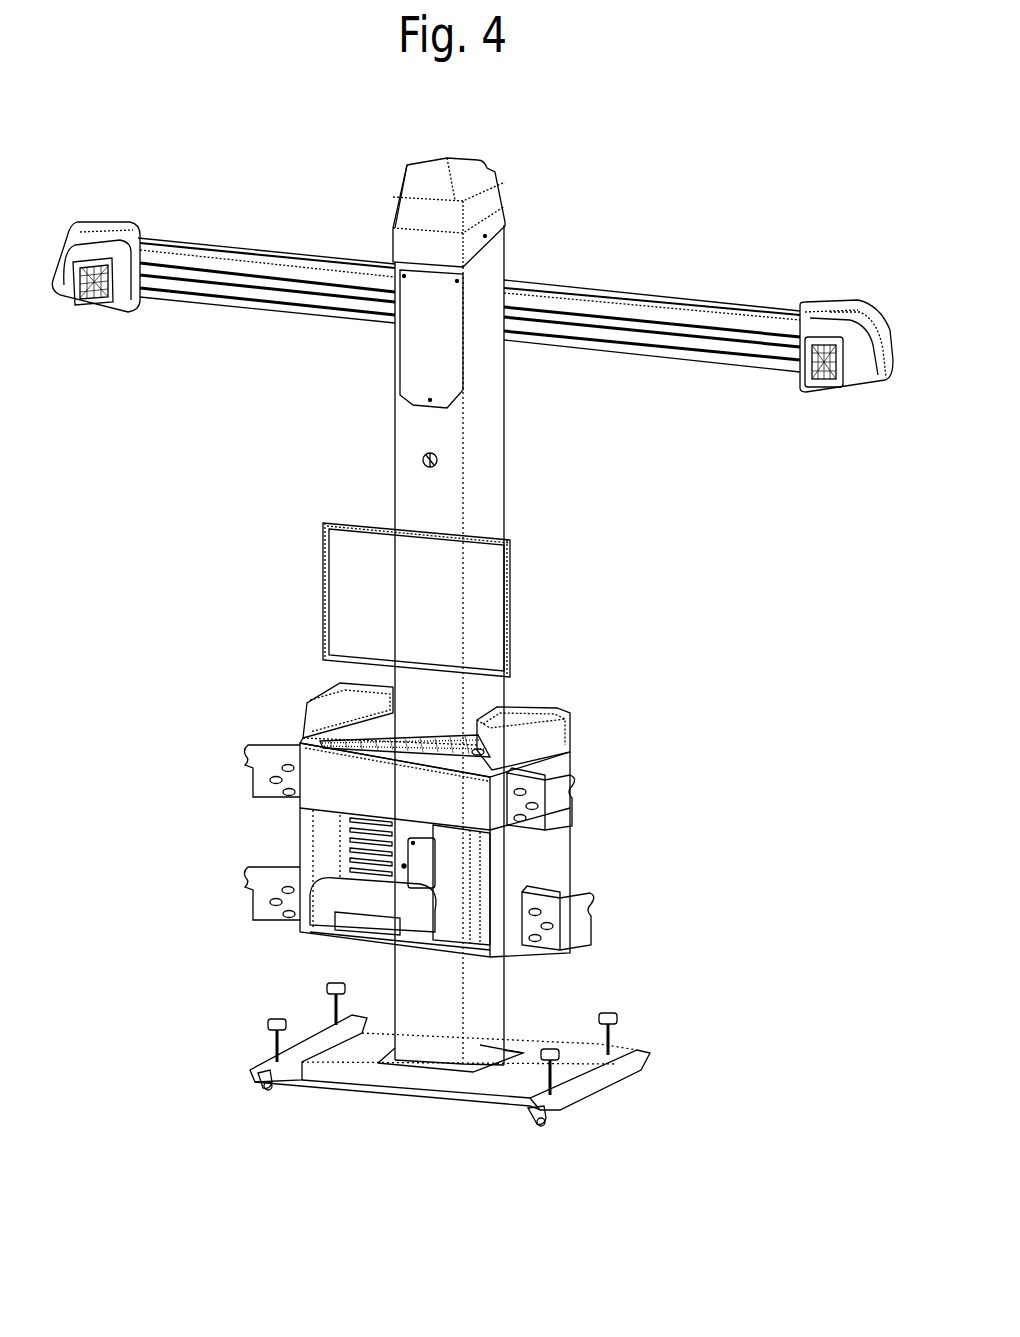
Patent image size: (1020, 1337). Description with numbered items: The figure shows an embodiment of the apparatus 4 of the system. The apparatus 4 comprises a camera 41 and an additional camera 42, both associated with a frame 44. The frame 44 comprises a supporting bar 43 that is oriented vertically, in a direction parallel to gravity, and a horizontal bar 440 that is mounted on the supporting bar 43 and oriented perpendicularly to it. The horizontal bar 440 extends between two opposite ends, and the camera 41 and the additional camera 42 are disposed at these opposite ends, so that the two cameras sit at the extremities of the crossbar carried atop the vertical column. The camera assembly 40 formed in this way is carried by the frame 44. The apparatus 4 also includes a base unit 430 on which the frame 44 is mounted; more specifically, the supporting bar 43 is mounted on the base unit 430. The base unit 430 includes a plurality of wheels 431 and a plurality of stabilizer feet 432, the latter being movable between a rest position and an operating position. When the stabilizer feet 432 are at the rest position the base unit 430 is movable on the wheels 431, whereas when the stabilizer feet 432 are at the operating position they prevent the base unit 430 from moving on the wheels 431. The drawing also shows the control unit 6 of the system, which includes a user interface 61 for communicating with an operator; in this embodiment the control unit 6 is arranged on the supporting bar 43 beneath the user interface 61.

The apparatus 4 is at (545, 205).
The camera beam 40 is at (125, 210).
The camera 41 is at (88, 297).
The additional camera 42 is at (818, 372).
The supporting bar 43 is at (485, 477).
The frame 44 is at (415, 407).
The horizontal bar 440 is at (665, 345).
The user interface 61 is at (485, 625).
The control unit 6 is at (330, 768).
The base unit 430 is at (485, 1095).
The wheels 431 is at (540, 1115).
The stabilizer feet 432 is at (555, 1115).